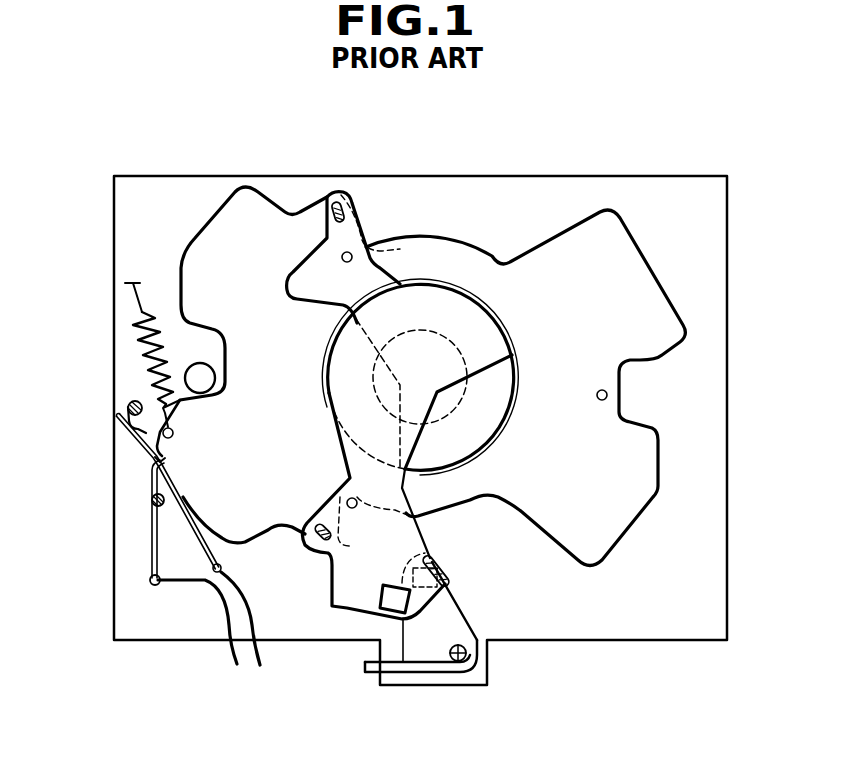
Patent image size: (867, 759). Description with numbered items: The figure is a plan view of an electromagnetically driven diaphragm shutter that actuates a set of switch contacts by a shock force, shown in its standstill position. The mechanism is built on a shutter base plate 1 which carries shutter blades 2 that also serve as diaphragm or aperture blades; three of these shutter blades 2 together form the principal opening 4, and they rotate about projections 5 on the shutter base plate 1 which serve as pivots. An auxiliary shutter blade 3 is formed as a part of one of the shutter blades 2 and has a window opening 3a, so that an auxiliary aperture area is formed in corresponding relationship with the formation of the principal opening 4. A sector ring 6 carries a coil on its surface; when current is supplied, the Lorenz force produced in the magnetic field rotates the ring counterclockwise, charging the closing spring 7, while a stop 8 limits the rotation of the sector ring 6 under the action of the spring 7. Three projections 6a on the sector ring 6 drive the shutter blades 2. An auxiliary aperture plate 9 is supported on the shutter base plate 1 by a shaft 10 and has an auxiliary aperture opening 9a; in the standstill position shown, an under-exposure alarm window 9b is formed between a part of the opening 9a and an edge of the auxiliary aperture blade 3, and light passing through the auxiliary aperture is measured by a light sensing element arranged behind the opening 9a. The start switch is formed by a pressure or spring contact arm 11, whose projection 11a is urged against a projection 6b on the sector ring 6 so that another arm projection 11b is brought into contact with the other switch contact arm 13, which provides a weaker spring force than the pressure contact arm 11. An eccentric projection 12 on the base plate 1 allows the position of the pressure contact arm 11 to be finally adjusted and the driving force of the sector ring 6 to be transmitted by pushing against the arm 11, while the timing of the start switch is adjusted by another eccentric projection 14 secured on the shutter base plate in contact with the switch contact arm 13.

The shutter base plate 1 is at (667, 630).
The shutter blades 2 is at (390, 278).
The auxiliary shutter blade 3 is at (346, 610).
The window opening 3a is at (378, 613).
The principal opening 4 is at (430, 332).
The projections 5 is at (352, 251).
The sector ring 6 is at (608, 565).
The projections 6a is at (343, 200).
The projection 6b is at (150, 463).
The closing spring 7 is at (133, 298).
The stop 8 is at (188, 362).
The auxiliary aperture plate 9 is at (418, 665).
The auxiliary aperture opening 9a is at (446, 578).
The under-exposure alarm window 9b is at (470, 565).
The shaft 10 is at (459, 663).
The pressure contact arm 11 is at (203, 545).
The projection 11a is at (162, 468).
The arm projection 11b is at (132, 430).
The eccentric projection 12 is at (127, 401).
The switch contact arm 13 is at (150, 548).
The eccentric projection 14 is at (157, 507).